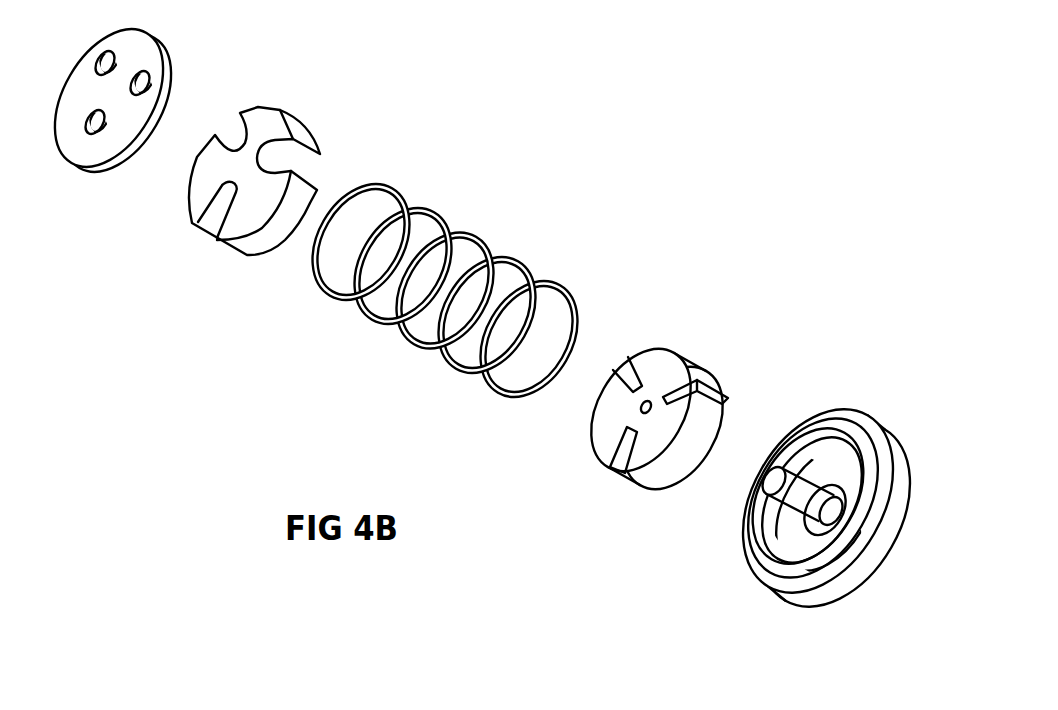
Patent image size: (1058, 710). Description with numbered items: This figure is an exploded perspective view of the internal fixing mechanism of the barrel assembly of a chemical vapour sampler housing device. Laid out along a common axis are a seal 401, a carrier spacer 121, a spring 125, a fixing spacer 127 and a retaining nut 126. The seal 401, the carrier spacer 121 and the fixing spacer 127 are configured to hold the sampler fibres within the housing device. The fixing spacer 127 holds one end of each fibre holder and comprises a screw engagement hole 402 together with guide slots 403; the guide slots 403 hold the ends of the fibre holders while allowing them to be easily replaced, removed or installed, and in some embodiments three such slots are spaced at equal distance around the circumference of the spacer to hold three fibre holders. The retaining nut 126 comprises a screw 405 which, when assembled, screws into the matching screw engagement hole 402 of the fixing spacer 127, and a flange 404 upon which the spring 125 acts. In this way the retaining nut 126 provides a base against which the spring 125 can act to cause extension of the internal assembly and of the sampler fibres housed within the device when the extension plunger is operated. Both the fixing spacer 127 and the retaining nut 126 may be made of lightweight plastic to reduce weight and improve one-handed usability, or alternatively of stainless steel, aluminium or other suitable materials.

The seal 401 is at (137, 160).
The carrier spacer 121 is at (222, 243).
The spring 125 is at (405, 332).
The fixing spacer 127 is at (634, 390).
The screw engagement hole 402 is at (648, 397).
The guide slots 403 is at (687, 390).
The retaining nut 126 is at (797, 498).
The flange 404 is at (867, 422).
The screw 405 is at (813, 445).